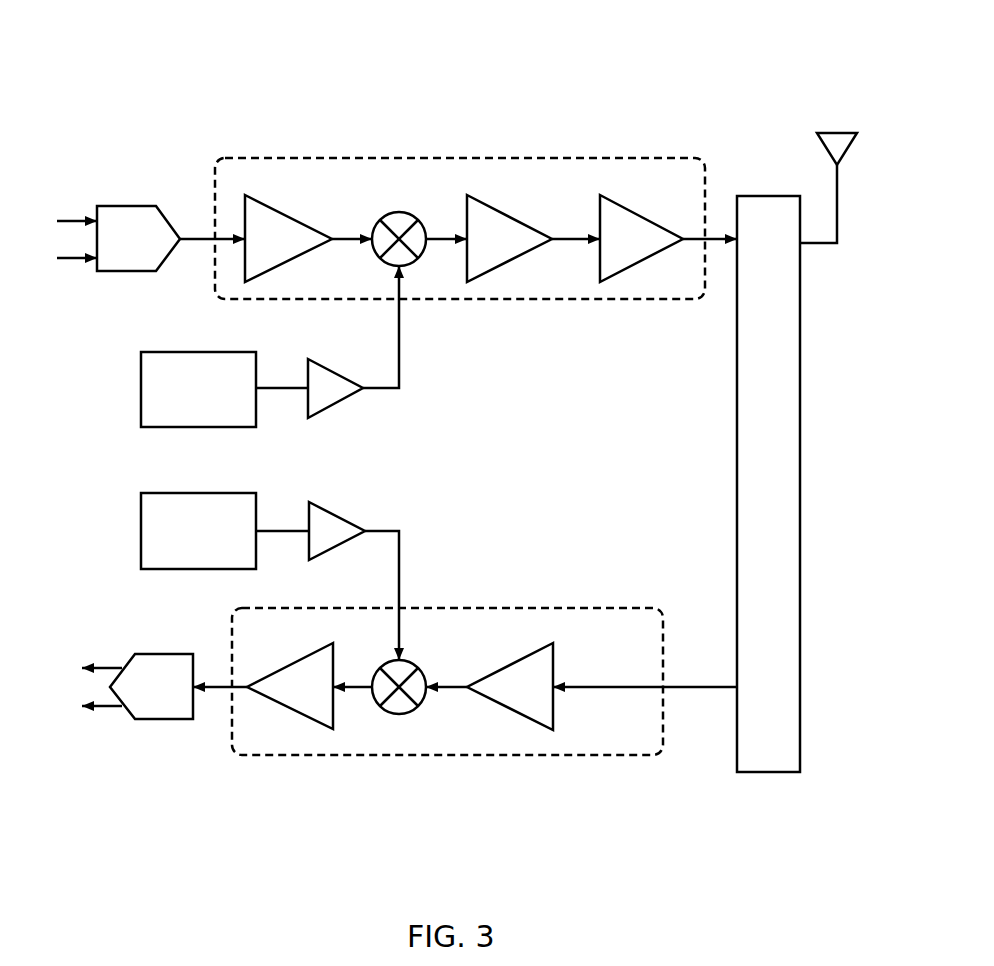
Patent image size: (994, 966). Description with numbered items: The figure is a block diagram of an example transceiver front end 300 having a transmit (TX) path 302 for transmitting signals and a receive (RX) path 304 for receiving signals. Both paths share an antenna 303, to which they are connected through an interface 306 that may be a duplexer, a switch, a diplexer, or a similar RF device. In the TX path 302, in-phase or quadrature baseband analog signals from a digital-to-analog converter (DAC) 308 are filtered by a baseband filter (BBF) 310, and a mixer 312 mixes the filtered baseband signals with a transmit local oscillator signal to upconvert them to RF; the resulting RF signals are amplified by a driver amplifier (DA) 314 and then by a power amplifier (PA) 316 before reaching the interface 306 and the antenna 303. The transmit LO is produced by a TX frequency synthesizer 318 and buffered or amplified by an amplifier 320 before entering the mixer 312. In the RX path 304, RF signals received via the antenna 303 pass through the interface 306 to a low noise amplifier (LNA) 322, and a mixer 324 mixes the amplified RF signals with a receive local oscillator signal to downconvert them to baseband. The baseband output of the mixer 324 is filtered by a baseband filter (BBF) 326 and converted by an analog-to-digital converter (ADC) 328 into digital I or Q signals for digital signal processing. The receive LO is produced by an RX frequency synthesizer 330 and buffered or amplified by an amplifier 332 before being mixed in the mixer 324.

The transceiver front end 300 is at (778, 33).
The transmit (TX) path 302 is at (628, 158).
The antenna 303 is at (837, 133).
The receive (RX) path 304 is at (598, 608).
The interface 306 is at (760, 196).
The digital-to-analog converter (DAC) 308 is at (122, 206).
The baseband filter (BBF) 310 is at (296, 221).
The mixer 312 is at (401, 212).
The driver amplifier (DA) 314 is at (518, 221).
The power amplifier (PA) 316 is at (637, 215).
The TX frequency synthesizer 318 is at (224, 352).
The amplifier 320 is at (325, 368).
The low noise amplifier (LNA) 322 is at (553, 665).
The mixer 324 is at (418, 668).
The baseband filter (BBF) 326 is at (307, 656).
The analog-to-digital converter (ADC) 328 is at (160, 654).
The RX frequency synthesizer 330 is at (224, 493).
The amplifier 332 is at (326, 511).